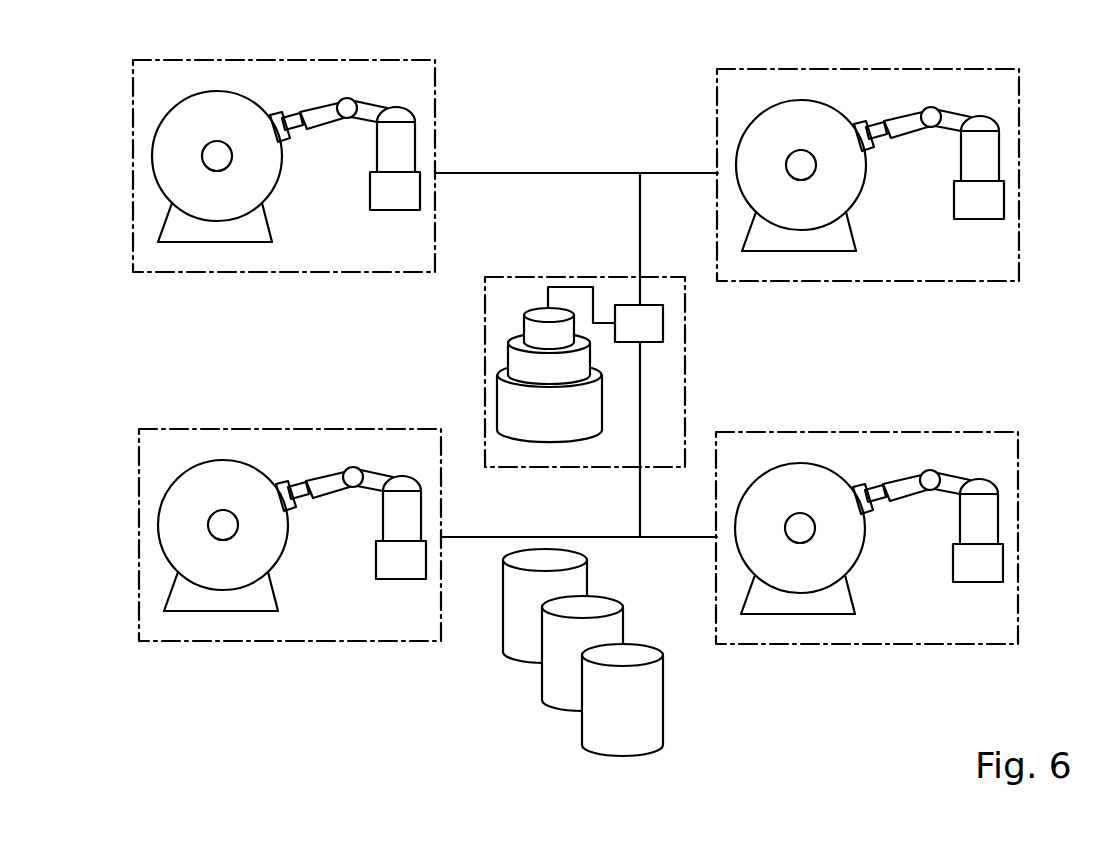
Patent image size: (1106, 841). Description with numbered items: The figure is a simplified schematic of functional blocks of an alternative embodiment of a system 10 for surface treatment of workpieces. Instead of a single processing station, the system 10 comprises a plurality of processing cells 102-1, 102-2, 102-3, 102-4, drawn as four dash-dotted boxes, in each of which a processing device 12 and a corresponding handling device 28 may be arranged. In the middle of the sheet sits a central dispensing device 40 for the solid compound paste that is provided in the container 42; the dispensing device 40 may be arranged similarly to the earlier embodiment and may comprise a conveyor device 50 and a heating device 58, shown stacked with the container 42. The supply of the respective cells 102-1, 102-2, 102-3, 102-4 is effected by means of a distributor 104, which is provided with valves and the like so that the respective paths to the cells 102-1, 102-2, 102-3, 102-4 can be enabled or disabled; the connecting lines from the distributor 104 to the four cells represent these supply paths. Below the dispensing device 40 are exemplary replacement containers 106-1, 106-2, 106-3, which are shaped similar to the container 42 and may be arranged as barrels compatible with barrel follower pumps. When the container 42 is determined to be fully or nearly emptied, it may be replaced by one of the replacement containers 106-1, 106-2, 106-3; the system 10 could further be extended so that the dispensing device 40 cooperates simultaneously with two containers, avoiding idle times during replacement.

The system 10 is at (320, 690).
The processing device 12 is at (167, 208).
The handling device 28 is at (398, 147).
The central dispensing device 40 is at (584, 272).
The container 42 is at (513, 355).
The conveyor device 50 is at (517, 323).
The heating device 58 is at (507, 397).
The processing cell 102-1 is at (288, 198).
The processing cell 102-2 is at (308, 425).
The processing cell 102-3 is at (803, 283).
The processing cell 102-4 is at (777, 430).
The distributor 104 is at (663, 321).
The replacement container 106-1 is at (523, 617).
The replacement container 106-2 is at (553, 685).
The replacement container 106-3 is at (602, 737).